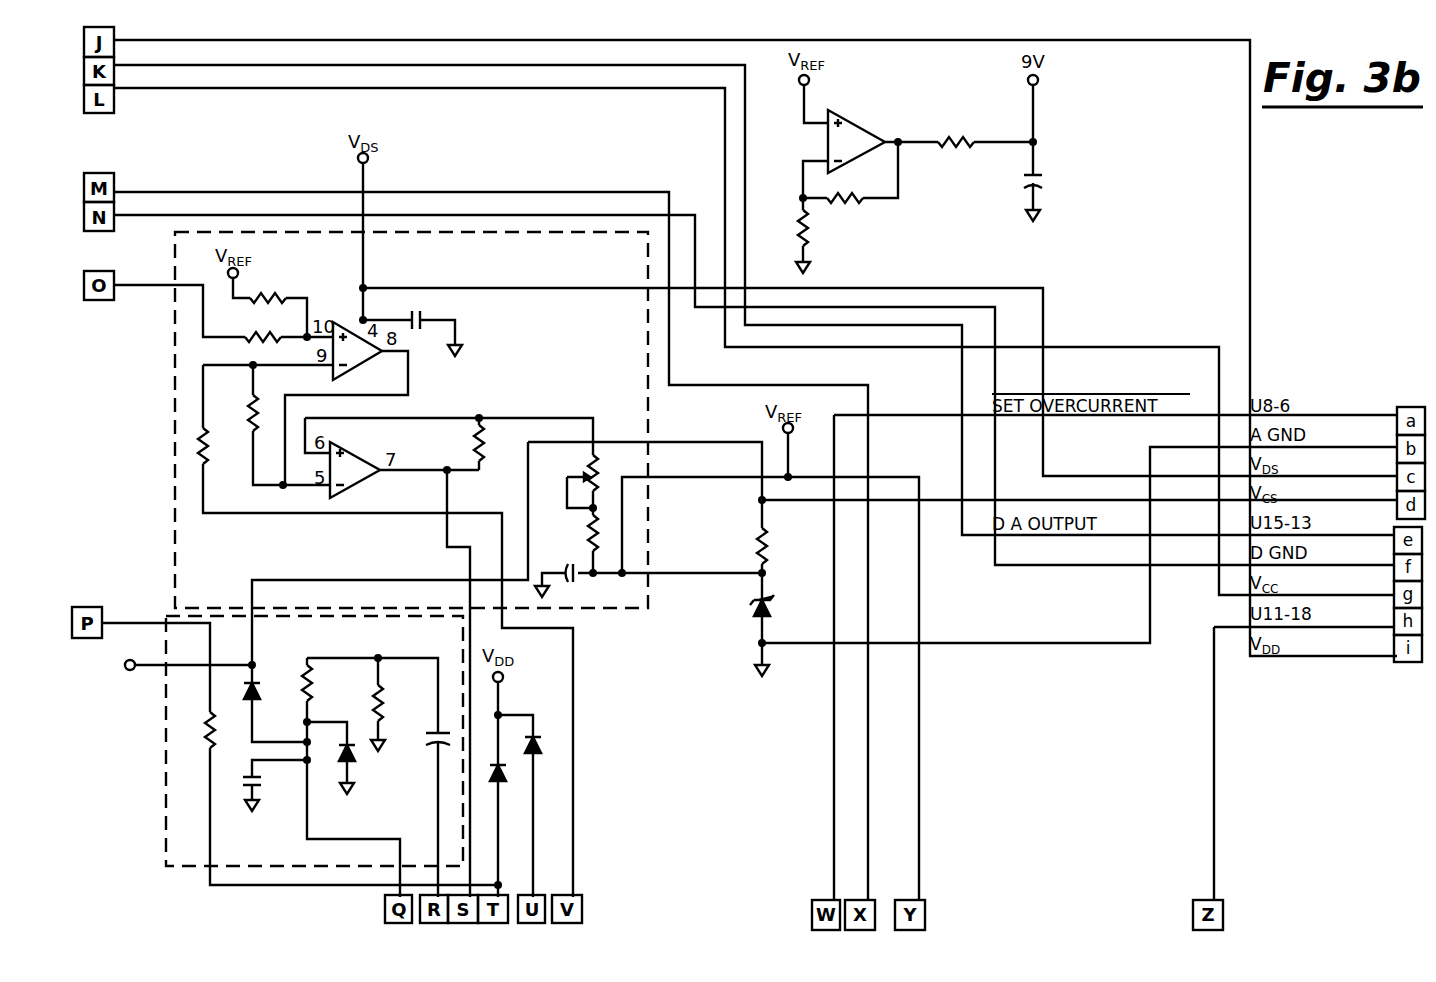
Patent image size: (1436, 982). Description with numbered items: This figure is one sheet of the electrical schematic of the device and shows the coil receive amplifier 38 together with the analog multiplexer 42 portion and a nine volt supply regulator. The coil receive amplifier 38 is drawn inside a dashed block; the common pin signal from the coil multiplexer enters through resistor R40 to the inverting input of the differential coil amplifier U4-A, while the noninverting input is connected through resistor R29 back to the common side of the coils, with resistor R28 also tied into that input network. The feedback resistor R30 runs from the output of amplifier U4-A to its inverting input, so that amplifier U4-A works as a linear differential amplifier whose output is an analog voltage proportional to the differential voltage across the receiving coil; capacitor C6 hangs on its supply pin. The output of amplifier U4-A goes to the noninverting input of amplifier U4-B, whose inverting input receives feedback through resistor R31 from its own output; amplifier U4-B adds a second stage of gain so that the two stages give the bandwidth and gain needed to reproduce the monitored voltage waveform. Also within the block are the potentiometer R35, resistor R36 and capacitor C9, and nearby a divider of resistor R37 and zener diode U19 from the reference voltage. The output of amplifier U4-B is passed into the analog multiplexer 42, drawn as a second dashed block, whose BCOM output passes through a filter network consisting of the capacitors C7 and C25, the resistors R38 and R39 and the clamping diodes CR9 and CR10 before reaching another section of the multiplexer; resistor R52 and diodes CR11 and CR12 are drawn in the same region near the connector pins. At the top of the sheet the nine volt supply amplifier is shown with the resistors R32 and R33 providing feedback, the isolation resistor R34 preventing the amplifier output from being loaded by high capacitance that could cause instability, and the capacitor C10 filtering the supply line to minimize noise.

The differential coil amplifier U4-A is at (363, 359).
The amplifier U4-B is at (361, 464).
The resistor R28 is at (270, 306).
The resistor R29 is at (259, 328).
The feedback resistor R30 is at (232, 413).
The resistor R40 is at (219, 446).
The feedback resistor R31 is at (462, 443).
The potentiometer R35 is at (608, 471).
The resistor R36 is at (573, 533).
The resistor R37 is at (780, 546).
The isolation resistor R34 is at (954, 130).
The resistor R33 is at (845, 209).
The resistor R32 is at (821, 228).
The resistor R52 is at (222, 728).
The resistor R39 is at (325, 683).
The resistor R38 is at (396, 703).
The capacitor C6 is at (413, 309).
The capacitor C9 is at (569, 585).
The capacitor C10 is at (1053, 174).
The capacitor C7 is at (422, 742).
The capacitor C25 is at (269, 784).
The clamping diode CR9 is at (270, 695).
The clamping diode CR10 is at (369, 759).
The diode CR11 is at (510, 790).
The diode CR12 is at (544, 745).
The zener diode U19 is at (780, 608).
The coil receive amplifier 38 is at (648, 590).
The analog multiplexer 42 is at (166, 837).